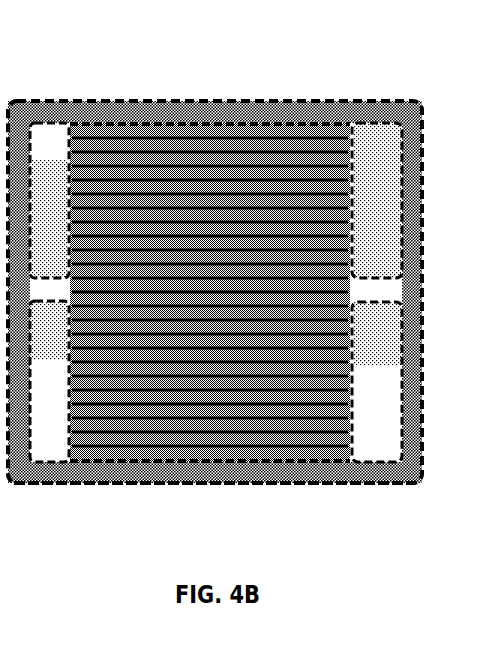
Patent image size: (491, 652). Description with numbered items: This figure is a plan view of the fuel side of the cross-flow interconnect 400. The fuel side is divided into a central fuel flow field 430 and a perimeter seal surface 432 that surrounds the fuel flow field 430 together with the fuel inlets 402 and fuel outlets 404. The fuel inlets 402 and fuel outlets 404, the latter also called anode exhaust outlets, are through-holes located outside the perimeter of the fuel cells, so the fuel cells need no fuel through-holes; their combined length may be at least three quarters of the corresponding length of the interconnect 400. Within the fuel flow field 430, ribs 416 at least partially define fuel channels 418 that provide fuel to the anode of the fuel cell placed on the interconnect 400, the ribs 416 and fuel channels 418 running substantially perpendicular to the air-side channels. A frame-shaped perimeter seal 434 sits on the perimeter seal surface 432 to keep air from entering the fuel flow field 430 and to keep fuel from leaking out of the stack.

The interconnect 400 is at (215, 283).
The fuel inlets 402 is at (394, 180).
The fuel outlets 404 is at (68, 180).
The ribs 416 is at (222, 172).
The fuel channels 418 is at (125, 410).
The fuel flow field 430 is at (211, 123).
The perimeter seal surface 432 is at (215, 485).
The perimeter seal 434 is at (357, 103).